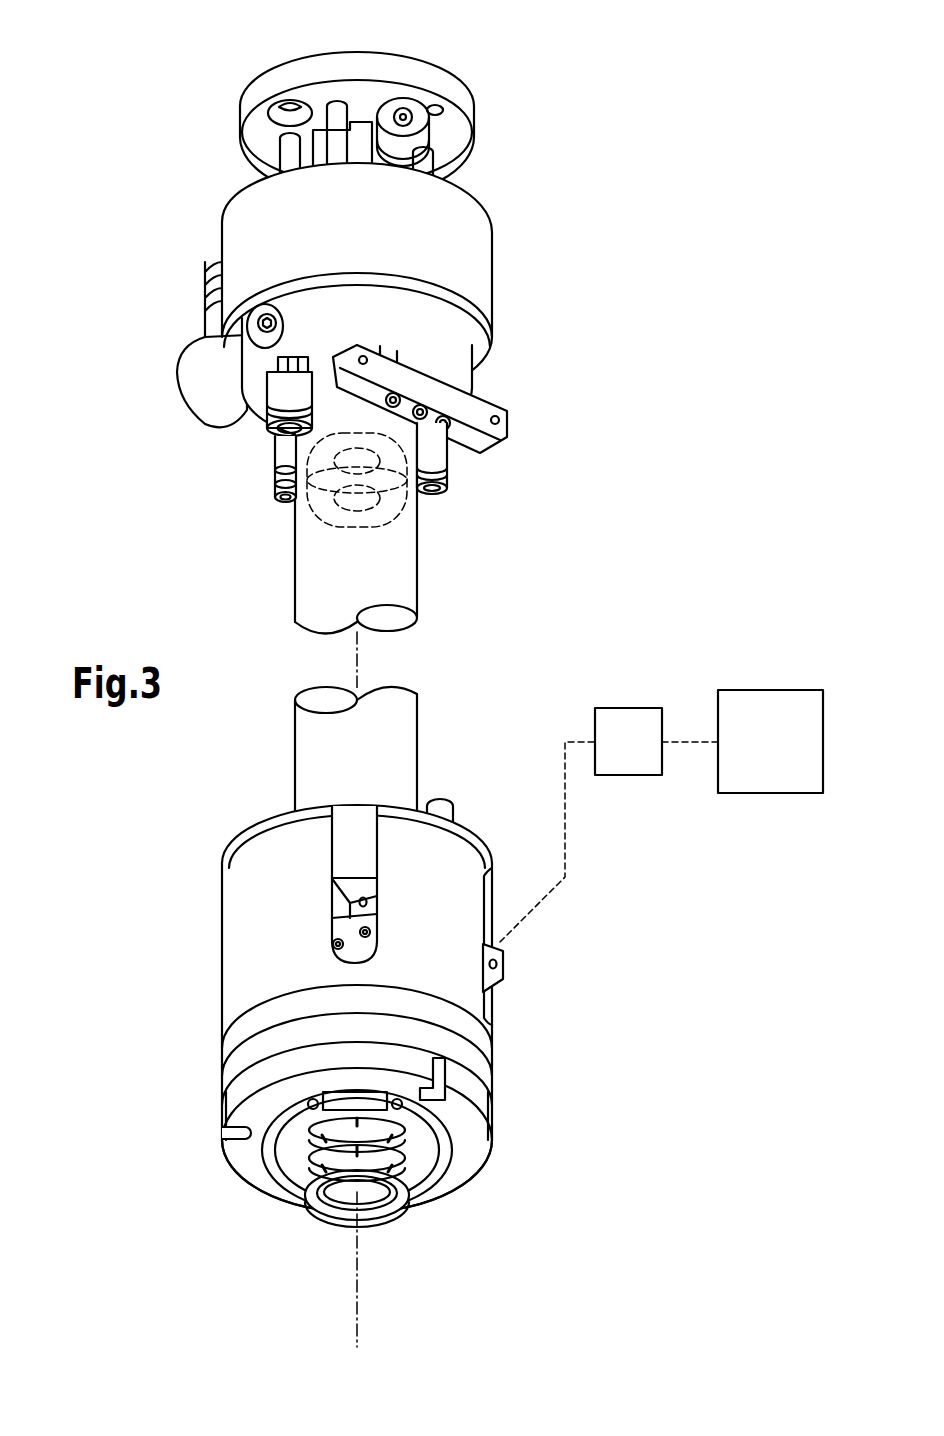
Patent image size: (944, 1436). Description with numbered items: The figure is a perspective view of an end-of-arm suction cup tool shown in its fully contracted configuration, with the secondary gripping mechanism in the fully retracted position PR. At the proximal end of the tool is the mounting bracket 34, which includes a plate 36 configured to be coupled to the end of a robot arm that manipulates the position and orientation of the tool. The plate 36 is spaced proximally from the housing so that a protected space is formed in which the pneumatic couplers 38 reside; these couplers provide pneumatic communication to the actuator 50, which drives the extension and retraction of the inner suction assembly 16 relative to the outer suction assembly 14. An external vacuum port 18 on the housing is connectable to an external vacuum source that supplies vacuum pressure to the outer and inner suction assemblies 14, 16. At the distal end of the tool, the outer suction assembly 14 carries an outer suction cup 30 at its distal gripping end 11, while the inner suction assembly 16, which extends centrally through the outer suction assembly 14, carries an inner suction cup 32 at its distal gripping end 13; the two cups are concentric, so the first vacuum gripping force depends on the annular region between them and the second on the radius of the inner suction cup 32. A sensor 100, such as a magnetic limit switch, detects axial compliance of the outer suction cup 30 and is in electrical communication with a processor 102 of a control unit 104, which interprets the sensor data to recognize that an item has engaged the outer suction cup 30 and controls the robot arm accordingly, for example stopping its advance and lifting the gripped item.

The distal gripping end of the primary gripping mechanism 11 is at (222, 1141).
The distal gripping end of the secondary gripping mechanism 13 is at (398, 1222).
The outer suction assembly 14 is at (357, 1017).
The inner suction assembly 16 is at (382, 1245).
The external vacuum port 18 is at (312, 398).
The outer suction cup 30 is at (470, 1148).
The inner suction cup 32 is at (337, 1210).
The mounting bracket 34 is at (367, 109).
The plate 36 is at (450, 137).
The pneumatic coupler 38 is at (404, 118).
The actuator 50 is at (373, 510).
The sensor 100 is at (502, 968).
The processor 102 is at (656, 741).
The control unit 104 is at (770, 741).
The fully retracted position PR is at (250, 1280).